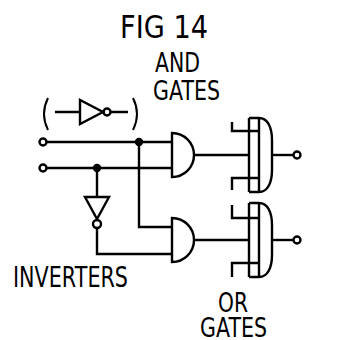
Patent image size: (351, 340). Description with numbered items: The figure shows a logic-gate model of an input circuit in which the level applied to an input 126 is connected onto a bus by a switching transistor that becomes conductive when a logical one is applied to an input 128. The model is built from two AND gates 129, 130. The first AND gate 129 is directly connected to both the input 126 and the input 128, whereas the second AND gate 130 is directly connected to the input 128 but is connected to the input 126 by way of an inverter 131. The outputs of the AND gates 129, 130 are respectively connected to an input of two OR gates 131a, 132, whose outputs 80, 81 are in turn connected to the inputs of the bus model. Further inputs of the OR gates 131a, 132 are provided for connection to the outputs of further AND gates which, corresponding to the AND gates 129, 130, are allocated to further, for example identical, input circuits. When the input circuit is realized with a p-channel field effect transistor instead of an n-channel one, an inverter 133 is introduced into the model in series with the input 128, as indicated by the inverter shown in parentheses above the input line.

The output 80 is at (297, 155).
The output 81 is at (297, 240).
The input 126 is at (89, 168).
The input 128 is at (89, 140).
The AND gate 129 is at (211, 97).
The AND gate 130 is at (181, 256).
The inverter 131 is at (67, 259).
The OR gate 131a is at (260, 141).
The OR gate 132 is at (250, 305).
The inverter 133 is at (90, 101).